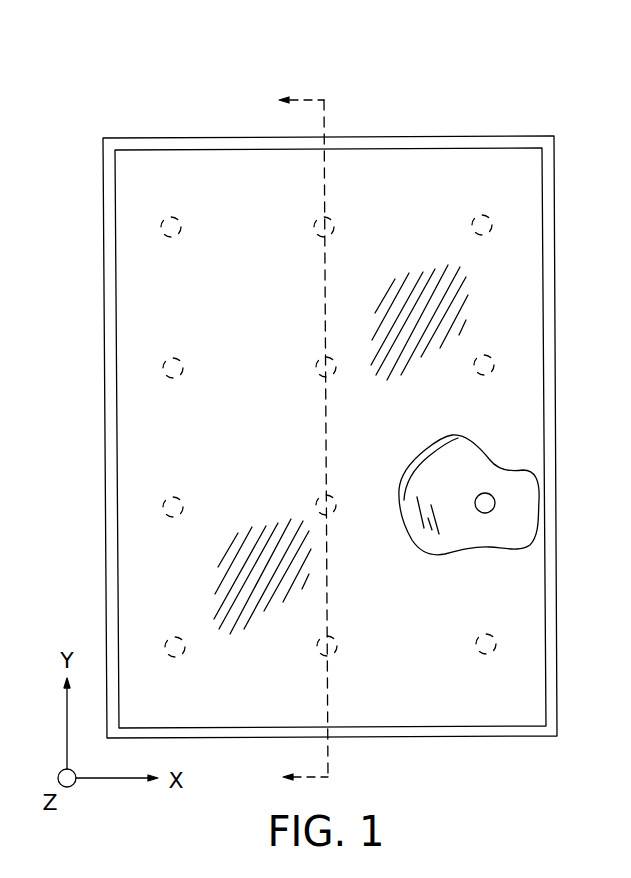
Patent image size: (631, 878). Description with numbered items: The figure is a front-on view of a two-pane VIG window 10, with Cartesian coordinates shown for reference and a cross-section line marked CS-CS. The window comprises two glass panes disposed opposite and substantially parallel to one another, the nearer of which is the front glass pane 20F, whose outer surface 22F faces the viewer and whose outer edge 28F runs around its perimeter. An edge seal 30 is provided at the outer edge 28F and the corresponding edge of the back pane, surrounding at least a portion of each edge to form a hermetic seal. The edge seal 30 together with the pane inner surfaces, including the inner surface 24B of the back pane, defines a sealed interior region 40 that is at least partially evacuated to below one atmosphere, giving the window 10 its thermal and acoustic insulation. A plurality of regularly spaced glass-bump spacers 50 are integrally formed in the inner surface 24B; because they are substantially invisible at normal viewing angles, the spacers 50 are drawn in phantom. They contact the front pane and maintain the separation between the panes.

The two-pane VIG window 10 is at (190, 68).
The front glass pane 20F is at (466, 160).
The outer surface of front glass pane 22F is at (137, 268).
The inner surface of back glass pane 24B is at (515, 520).
The outer edge of front glass pane 28F is at (110, 186).
The edge seal 30 is at (333, 434).
The sealed interior region 40 is at (505, 482).
The glass-bump spacers 50 is at (333, 226).